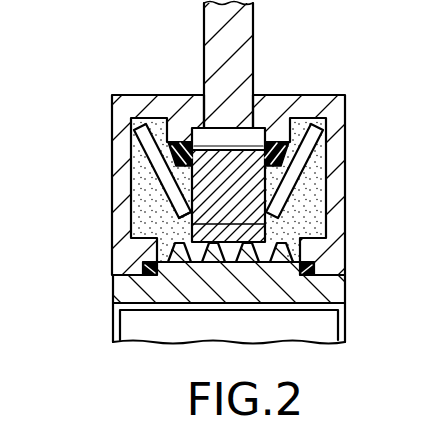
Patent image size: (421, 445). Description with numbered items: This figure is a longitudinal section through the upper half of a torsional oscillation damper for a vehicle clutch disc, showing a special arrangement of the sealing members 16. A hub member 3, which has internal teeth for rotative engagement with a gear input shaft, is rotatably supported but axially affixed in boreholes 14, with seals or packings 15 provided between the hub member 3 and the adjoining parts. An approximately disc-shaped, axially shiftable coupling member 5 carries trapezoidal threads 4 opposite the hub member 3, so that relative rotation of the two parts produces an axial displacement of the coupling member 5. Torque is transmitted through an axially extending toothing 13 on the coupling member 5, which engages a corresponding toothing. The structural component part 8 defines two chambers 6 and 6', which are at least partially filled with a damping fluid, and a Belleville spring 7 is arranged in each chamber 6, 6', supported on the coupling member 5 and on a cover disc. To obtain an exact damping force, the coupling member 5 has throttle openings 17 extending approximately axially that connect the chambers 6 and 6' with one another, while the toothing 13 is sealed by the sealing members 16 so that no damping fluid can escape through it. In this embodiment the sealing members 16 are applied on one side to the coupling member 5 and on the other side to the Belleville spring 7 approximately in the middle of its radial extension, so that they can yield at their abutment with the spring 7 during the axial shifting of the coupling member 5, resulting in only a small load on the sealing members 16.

The hub member 3 is at (270, 283).
The trapezoidal threads 4 is at (218, 258).
The coupling member 5 is at (160, 179).
The chamber 6 is at (126, 190).
The chamber 6' is at (329, 190).
The Belleville spring 7 is at (145, 152).
The structural component part 8 is at (327, 143).
The axially extending toothing 13 is at (240, 122).
The boreholes 14 is at (143, 270).
The seals or packings 15 is at (122, 292).
The sealing members 16 is at (182, 140).
The throttle openings 17 is at (188, 221).